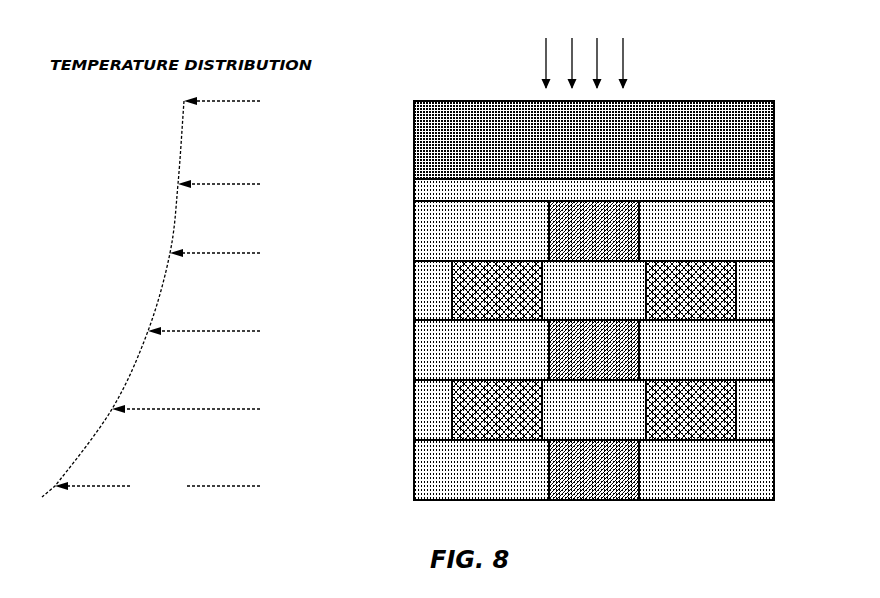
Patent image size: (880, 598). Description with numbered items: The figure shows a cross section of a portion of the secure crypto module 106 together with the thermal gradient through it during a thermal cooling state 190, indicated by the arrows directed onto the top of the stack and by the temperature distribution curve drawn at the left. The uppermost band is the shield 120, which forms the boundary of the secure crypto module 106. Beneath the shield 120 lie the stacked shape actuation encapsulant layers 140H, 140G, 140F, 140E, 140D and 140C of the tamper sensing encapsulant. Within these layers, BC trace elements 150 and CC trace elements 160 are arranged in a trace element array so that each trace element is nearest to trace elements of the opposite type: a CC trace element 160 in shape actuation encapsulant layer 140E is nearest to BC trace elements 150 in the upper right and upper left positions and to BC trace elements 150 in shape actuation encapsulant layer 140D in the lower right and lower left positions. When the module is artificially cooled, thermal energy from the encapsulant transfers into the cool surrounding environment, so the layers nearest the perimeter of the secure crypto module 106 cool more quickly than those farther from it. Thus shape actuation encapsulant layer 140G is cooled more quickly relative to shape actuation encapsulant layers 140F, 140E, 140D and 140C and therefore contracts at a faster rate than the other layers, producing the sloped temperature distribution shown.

The secure crypto module 106 is at (602, 281).
The shield 120 is at (752, 138).
The shape actuation encapsulant layer 140C is at (762, 475).
The shape actuation encapsulant layer 140D is at (762, 415).
The shape actuation encapsulant layer 140E is at (762, 355).
The shape actuation encapsulant layer 140F is at (762, 296).
The shape actuation encapsulant layer 140G is at (762, 238).
The shape actuation encapsulant layer 140H is at (765, 192).
The BC trace elements 150 is at (594, 350).
The CC trace elements 160 is at (594, 350).
The thermal cooling state 190 is at (584, 47).